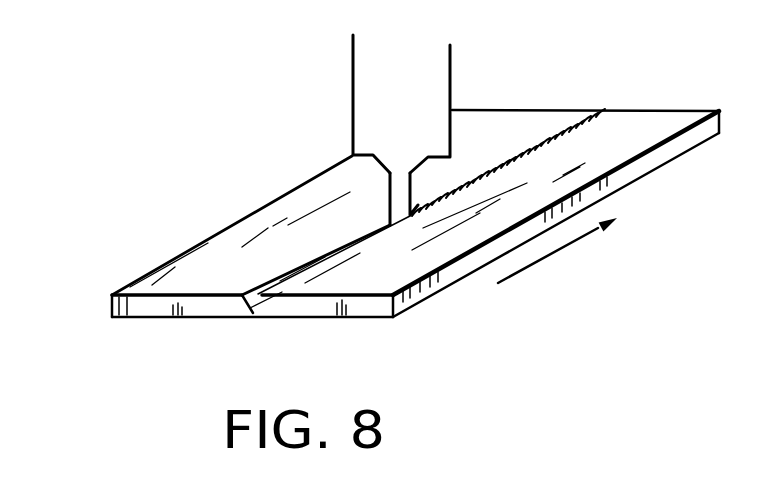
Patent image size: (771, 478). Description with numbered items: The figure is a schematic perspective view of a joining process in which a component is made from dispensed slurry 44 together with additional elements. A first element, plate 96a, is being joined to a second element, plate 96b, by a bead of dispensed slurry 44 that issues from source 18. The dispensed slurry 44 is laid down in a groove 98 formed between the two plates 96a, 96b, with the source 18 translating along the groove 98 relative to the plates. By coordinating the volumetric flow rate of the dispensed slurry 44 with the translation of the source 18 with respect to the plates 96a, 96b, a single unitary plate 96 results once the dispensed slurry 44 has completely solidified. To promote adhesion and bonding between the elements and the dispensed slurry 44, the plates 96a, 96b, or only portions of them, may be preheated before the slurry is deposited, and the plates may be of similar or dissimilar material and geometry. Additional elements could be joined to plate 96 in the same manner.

The source 18 is at (326, 84).
The dispensed slurry 44 is at (398, 192).
The single unitary plate 96 is at (97, 302).
The plate 96a is at (650, 118).
The plate 96b is at (214, 273).
The groove 98 is at (240, 297).